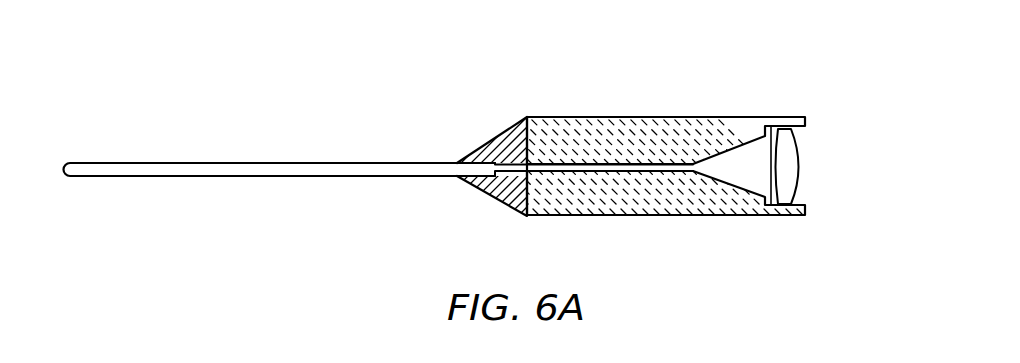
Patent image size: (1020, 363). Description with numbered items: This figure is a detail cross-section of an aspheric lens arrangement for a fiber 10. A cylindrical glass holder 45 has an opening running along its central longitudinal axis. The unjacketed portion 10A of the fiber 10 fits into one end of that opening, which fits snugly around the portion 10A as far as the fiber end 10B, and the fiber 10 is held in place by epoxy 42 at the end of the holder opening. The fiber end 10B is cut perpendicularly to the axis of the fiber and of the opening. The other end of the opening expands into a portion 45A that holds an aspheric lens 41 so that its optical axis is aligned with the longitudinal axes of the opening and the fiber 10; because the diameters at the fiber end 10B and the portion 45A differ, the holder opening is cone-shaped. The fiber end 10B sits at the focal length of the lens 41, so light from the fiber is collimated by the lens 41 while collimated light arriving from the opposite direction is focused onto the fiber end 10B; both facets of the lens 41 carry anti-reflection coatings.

The fiber 10 is at (260, 162).
The unjacketed portion of the fiber 10A is at (637, 157).
The fiber end 10B is at (700, 167).
The aspheric lens 41 is at (782, 193).
The epoxy 42 is at (500, 136).
The holder 45 is at (583, 203).
The expanded portion of the holder opening 45A is at (798, 203).